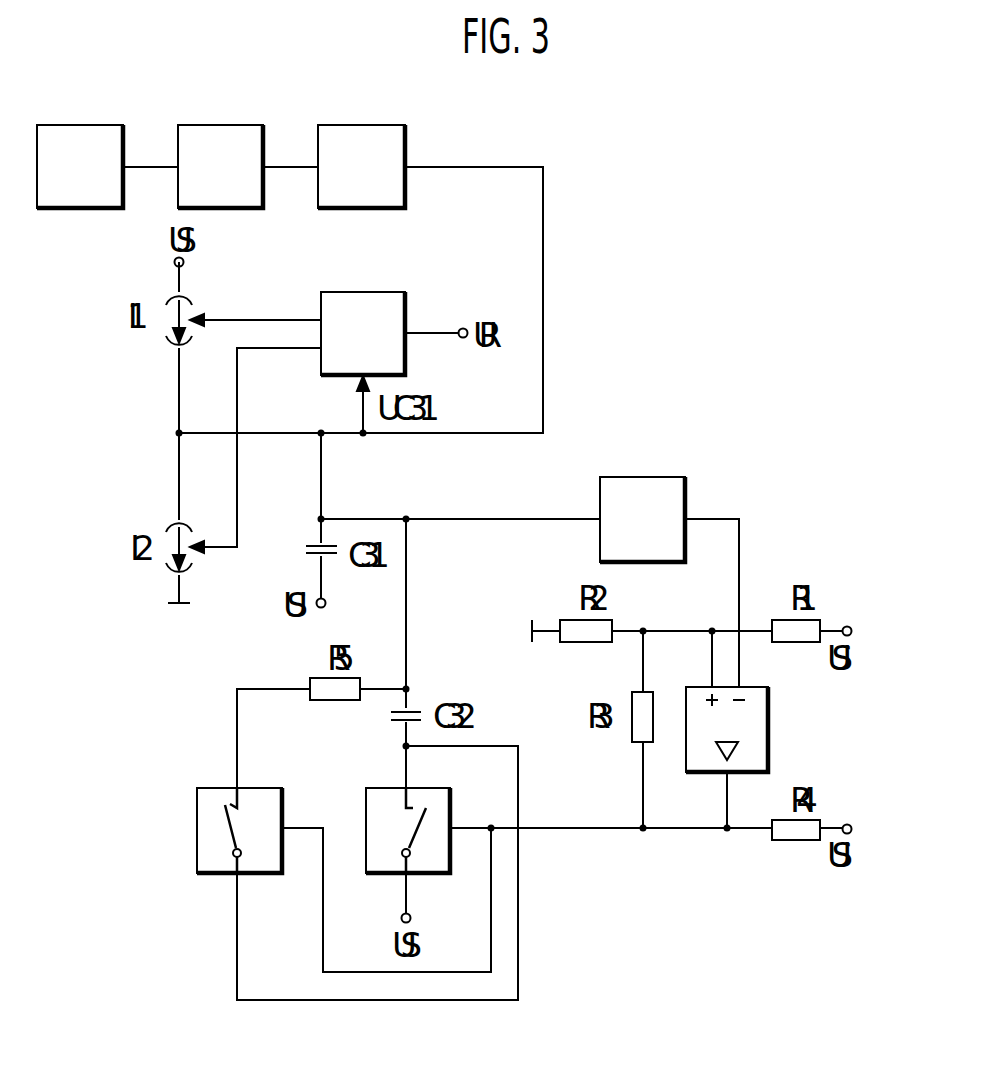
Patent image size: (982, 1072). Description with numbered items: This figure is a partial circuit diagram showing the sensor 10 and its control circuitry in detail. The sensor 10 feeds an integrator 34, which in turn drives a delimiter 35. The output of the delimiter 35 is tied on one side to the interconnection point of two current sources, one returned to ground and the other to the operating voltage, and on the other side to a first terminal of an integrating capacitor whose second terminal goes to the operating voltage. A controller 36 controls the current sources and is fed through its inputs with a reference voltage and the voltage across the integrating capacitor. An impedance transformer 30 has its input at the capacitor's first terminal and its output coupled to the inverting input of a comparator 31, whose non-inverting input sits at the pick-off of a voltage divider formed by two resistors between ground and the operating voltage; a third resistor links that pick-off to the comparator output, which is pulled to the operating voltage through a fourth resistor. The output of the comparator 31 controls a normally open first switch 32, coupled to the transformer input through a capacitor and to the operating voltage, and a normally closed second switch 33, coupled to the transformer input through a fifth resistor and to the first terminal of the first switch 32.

The sensor 10 is at (70, 126).
The integrator 34 is at (210, 126).
The delimiter 35 is at (350, 126).
The controller 36 is at (341, 293).
The impedance transformer 30 is at (628, 478).
The comparator 31 is at (768, 716).
The first switch 32 is at (366, 800).
The second switch 33 is at (197, 800).